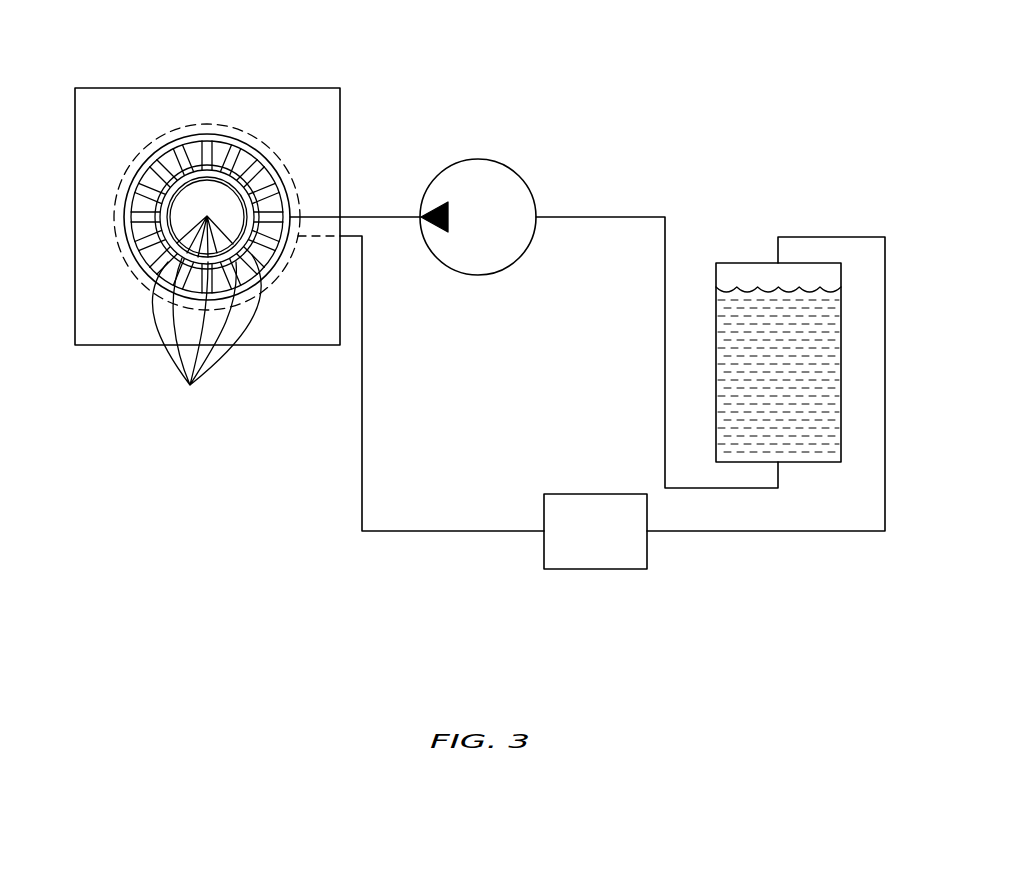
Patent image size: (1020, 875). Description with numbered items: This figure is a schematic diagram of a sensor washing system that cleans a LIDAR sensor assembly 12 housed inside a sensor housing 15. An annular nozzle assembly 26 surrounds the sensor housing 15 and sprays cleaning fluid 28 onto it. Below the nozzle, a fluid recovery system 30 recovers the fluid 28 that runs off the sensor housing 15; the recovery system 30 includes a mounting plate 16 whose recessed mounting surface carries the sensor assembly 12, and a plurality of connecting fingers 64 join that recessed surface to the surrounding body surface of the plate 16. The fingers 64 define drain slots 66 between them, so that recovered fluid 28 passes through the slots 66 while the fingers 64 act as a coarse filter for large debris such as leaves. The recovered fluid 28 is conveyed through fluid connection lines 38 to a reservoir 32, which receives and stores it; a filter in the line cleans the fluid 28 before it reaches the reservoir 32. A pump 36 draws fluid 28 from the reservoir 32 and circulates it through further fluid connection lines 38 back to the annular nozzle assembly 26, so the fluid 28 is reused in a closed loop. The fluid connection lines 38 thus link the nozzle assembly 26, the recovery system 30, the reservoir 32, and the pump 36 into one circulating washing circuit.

The sensor assembly 12 is at (140, 233).
The sensor housing 15 is at (221, 160).
The mounting plate 16 is at (110, 88).
The annular nozzle assembly 26 is at (248, 148).
The cleaning fluid 28 is at (748, 290).
The fluid recovery system 30 is at (177, 121).
The reservoir 32 is at (820, 462).
The pump 36 is at (507, 167).
The fluid connection lines 38 is at (387, 217).
The connecting fingers 64 is at (207, 216).
The drain slots 66 is at (190, 385).